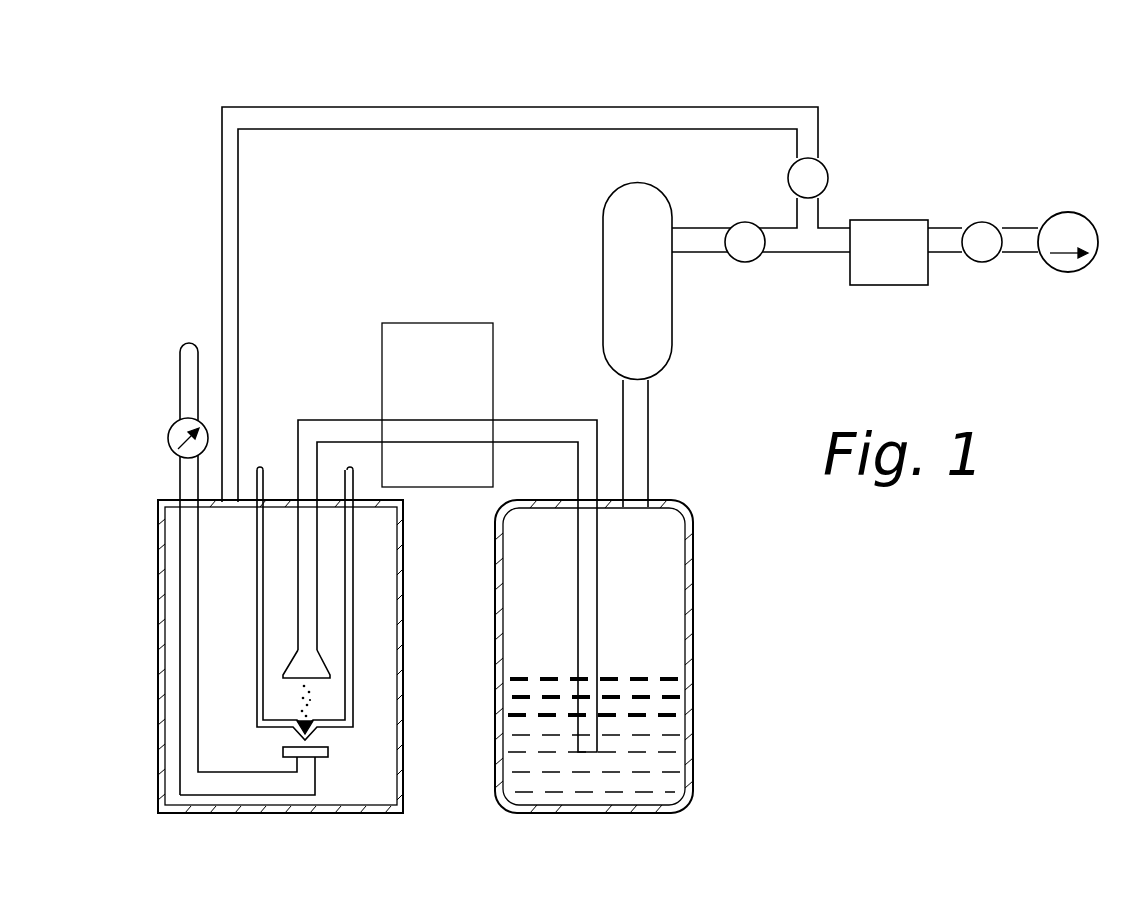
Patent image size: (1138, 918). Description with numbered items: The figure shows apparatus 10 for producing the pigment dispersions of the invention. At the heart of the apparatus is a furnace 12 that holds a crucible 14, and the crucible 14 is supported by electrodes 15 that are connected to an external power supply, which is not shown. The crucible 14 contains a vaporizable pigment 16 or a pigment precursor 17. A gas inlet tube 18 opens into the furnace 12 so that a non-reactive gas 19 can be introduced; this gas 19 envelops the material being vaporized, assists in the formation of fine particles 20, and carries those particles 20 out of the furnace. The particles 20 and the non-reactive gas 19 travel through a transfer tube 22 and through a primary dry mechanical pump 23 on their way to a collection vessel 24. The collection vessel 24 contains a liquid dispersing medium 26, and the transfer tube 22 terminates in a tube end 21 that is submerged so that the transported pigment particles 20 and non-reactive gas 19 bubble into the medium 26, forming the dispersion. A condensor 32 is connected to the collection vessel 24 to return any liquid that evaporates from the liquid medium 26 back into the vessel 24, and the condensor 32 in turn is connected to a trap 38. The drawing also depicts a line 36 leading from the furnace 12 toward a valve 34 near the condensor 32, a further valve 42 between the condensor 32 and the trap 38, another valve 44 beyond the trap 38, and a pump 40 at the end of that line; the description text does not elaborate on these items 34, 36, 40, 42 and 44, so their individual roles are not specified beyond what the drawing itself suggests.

The apparatus 10 is at (738, 602).
The furnace 12 is at (157, 760).
The crucible 14 is at (318, 730).
The electrodes 15 is at (255, 527).
The vaporizable pigment 16 is at (315, 718).
The pigment precursor 17 is at (303, 718).
The gas inlet tube 18 is at (302, 780).
The non-reactive gas 19 is at (188, 328).
The fine particles 20 is at (310, 703).
The tube end 21 is at (583, 750).
The transfer tube 22 is at (343, 418).
The primary dry mechanical pump 23 is at (440, 323).
The collection vessel 24 is at (695, 703).
The liquid dispersing medium 26 is at (653, 773).
The condensor 32 is at (600, 215).
The valve 34 is at (828, 170).
The return line 36 is at (618, 106).
The trap 38 is at (895, 218).
The pump 40 is at (1060, 212).
The valve 42 is at (750, 262).
The valve 44 is at (985, 262).